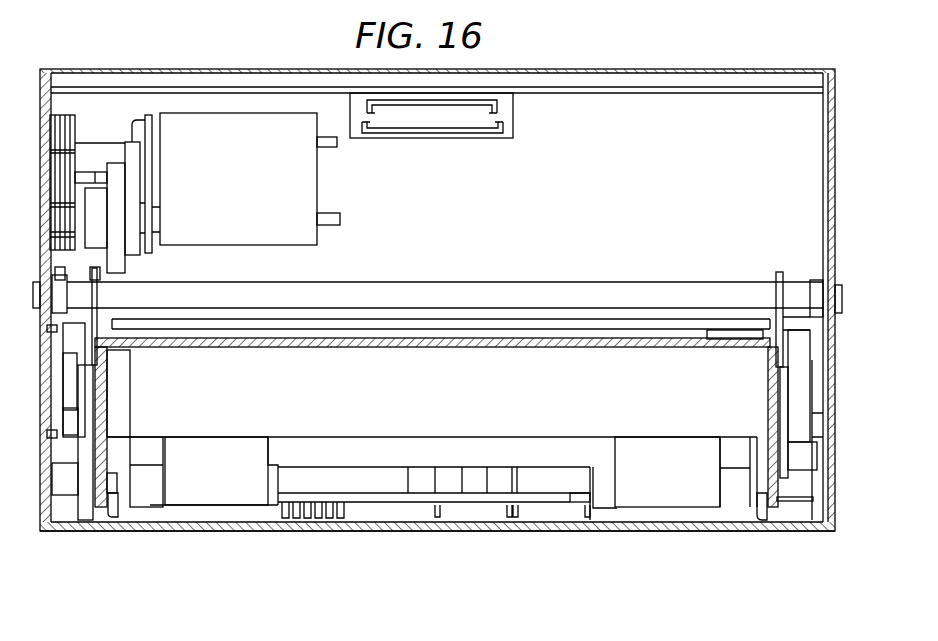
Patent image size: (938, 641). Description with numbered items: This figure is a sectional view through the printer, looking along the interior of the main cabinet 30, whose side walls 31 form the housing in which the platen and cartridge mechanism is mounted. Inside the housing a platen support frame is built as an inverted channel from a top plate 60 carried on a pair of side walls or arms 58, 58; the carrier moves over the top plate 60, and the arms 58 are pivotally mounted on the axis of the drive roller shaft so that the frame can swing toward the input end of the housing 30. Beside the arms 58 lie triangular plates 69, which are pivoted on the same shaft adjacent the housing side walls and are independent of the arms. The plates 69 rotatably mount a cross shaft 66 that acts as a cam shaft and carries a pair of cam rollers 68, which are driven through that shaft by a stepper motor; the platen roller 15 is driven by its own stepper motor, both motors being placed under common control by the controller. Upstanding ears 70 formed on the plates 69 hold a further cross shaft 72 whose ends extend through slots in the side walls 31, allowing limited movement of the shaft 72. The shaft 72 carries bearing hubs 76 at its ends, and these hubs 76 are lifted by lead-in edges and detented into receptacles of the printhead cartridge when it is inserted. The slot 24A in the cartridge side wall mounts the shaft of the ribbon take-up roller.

The platen roller 15 is at (375, 420).
The slot for take-up roller shaft 24A is at (297, 180).
The main cabinet 30 is at (62, 531).
The side walls 31 is at (38, 113).
The side walls or arms 58 is at (110, 410).
The top plate 60 is at (395, 345).
The cross shaft 66 is at (152, 450).
The cam rollers 68 is at (215, 485).
The triangular plates 69 is at (763, 317).
The upstanding ears 70 is at (777, 272).
The cross shaft 72 is at (600, 298).
The bearing hubs 76 is at (58, 292).